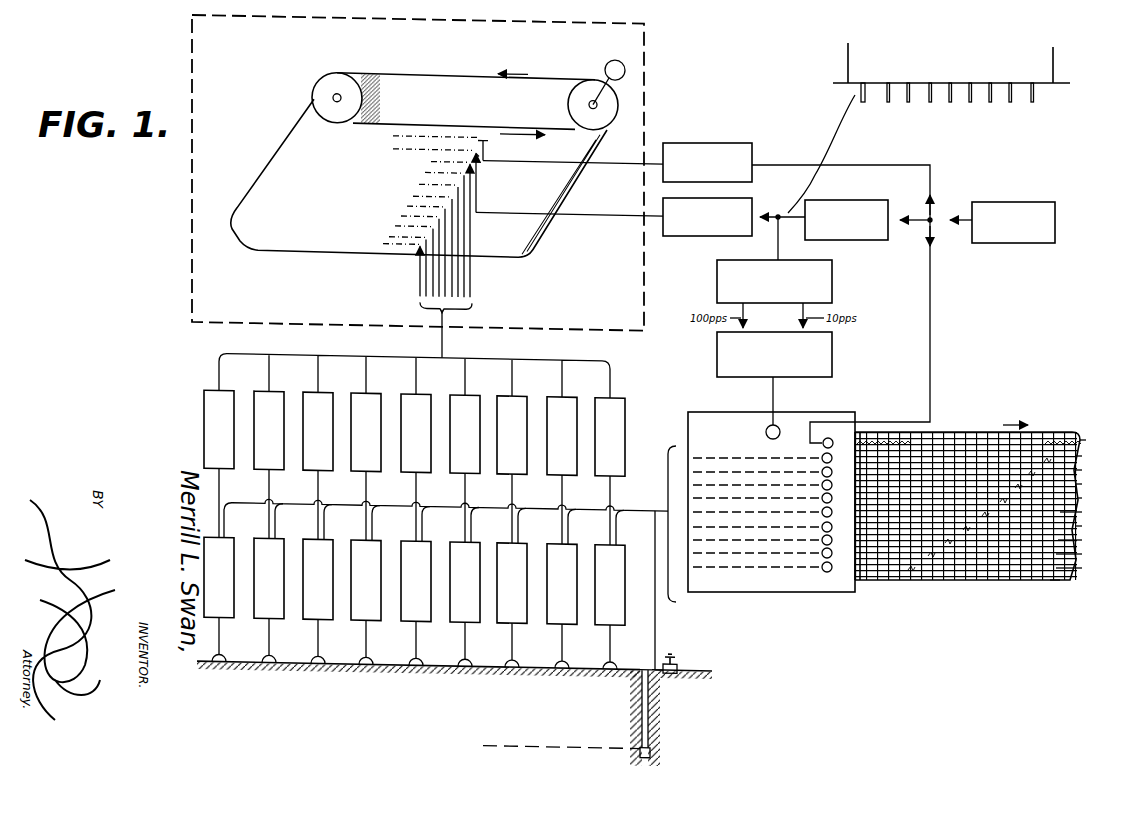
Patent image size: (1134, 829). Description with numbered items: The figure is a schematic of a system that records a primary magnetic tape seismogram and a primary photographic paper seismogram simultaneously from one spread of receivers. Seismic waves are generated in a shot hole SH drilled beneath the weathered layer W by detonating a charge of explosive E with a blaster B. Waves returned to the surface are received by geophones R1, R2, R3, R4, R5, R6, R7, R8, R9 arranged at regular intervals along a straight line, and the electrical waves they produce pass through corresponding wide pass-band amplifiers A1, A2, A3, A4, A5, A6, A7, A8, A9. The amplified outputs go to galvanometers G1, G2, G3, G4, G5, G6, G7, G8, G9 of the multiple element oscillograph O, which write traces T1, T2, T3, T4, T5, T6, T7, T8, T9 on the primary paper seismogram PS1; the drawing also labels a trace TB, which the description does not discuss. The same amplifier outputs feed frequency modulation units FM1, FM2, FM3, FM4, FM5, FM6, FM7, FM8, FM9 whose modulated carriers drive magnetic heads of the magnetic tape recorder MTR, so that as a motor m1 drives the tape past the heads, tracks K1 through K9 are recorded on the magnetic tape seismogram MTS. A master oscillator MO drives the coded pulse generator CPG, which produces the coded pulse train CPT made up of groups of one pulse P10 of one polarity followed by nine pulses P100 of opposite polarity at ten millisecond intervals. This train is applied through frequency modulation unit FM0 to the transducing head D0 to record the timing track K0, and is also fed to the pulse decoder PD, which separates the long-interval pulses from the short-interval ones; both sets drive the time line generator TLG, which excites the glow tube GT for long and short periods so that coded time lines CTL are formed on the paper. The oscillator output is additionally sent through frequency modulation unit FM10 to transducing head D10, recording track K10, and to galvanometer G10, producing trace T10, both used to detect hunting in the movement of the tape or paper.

The magnetic tape recorder MTR is at (650, 80).
The magnetic tape seismogram MTS is at (505, 100).
The motor m1 is at (620, 54).
The track K10 is at (470, 132).
The timing track K0 is at (444, 148).
The track K1 is at (426, 158).
The track K9 is at (376, 245).
The transducing head D10 is at (485, 141).
The magnetic transducing head D0 is at (478, 152).
The frequency modulation unit FM10 is at (735, 143).
The frequency modulation unit FM0 is at (748, 198).
The coded pulse generator CPG is at (846, 220).
The master oscillator MO is at (1055, 205).
The pulse decoder PD is at (832, 287).
The time line generator TLG is at (832, 362).
The glow tube GT is at (779, 427).
The coded pulse train CPT is at (960, 85).
The pulse P10 is at (851, 62).
The pulses P100 is at (865, 100).
The multiple element oscillograph O is at (771, 513).
The galvanometer G10 is at (837, 440).
The galvanometer G1 is at (770, 460).
The galvanometer G2 is at (770, 474).
The galvanometer G3 is at (770, 487).
The galvanometer G4 is at (770, 500).
The galvanometer G5 is at (770, 514).
The galvanometer G6 is at (770, 529).
The galvanometer G7 is at (770, 542).
The galvanometer G8 is at (770, 555).
The galvanometer G9 is at (770, 569).
The coded time lines CTL is at (960, 580).
The primary paper seismogram PS1 is at (893, 580).
The trace T1 is at (1082, 456).
The trace T2 is at (1082, 470).
The trace T3 is at (1082, 484).
The trace T4 is at (1082, 498).
The trace T5 is at (1084, 530).
The trace T6 is at (1082, 540).
The trace T7 is at (1077, 558).
The trace T8 is at (1077, 572).
The trace T9 is at (1060, 580).
The trace T10 is at (1086, 440).
The time break trace TB is at (1082, 514).
The frequency modulation unit FM1 is at (610, 437).
The frequency modulation unit FM2 is at (562, 436).
The frequency modulation unit FM3 is at (512, 435).
The frequency modulation unit FM4 is at (465, 434).
The frequency modulation unit FM5 is at (416, 433).
The frequency modulation unit FM6 is at (366, 432).
The frequency modulation unit FM7 is at (318, 431).
The frequency modulation unit FM8 is at (269, 430).
The frequency modulation unit FM9 is at (219, 429).
The amplifier A1 is at (610, 585).
The amplifier A2 is at (562, 584).
The amplifier A3 is at (512, 583).
The amplifier A4 is at (465, 582).
The amplifier A5 is at (416, 581).
The amplifier A6 is at (366, 580).
The amplifier A7 is at (318, 579).
The amplifier A8 is at (269, 578).
The amplifier A9 is at (219, 577).
The geophone R1 is at (614, 655).
The geophone R2 is at (565, 655).
The geophone R3 is at (515, 655).
The geophone R4 is at (468, 655).
The geophone R5 is at (419, 654).
The geophone R6 is at (370, 655).
The geophone R7 is at (321, 654).
The geophone R8 is at (272, 654).
The geophone R9 is at (222, 654).
The blaster B is at (680, 651).
The shot hole SH is at (650, 720).
The charge of explosive E is at (652, 745).
The weathered layer W is at (547, 740).